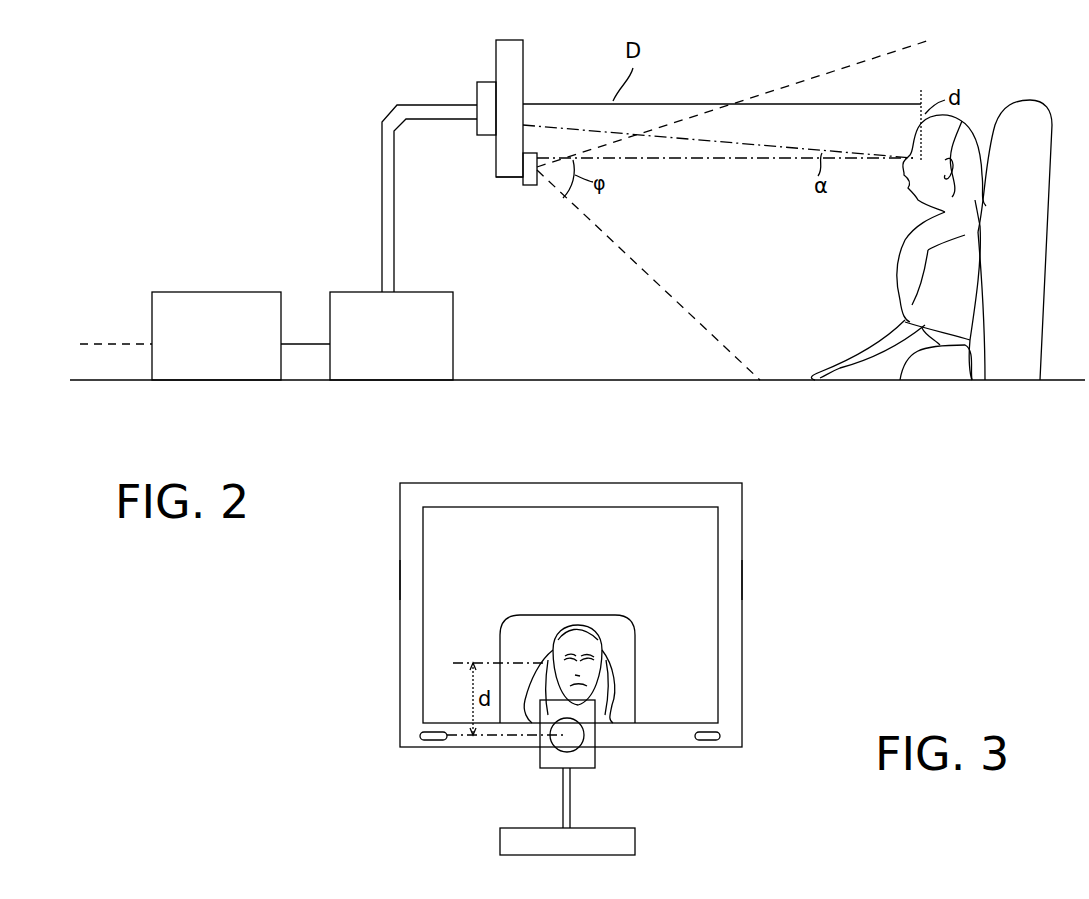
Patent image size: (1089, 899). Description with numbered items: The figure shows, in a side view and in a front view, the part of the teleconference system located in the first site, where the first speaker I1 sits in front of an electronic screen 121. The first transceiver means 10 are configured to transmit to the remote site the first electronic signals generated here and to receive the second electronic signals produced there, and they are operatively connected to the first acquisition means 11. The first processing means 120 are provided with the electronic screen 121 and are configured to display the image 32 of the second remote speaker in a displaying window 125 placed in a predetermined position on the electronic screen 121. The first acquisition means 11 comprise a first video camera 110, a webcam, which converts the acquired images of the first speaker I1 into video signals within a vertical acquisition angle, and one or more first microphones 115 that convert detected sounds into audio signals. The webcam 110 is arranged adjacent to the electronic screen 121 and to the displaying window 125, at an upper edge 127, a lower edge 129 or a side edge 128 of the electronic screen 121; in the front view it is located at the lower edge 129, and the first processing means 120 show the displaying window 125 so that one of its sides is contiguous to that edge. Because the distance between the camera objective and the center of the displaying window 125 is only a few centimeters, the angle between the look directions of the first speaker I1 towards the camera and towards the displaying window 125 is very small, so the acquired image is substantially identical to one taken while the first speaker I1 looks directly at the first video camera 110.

In FIG. 2, the first transceiver means 10 is at (205, 302).
In FIG. 2, the first processing means 120 is at (350, 302).
In FIG. 3, the first processing means 120 is at (640, 845).
In FIG. 2, the electronic screen 121 is at (518, 72).
In FIG. 3, the electronic screen 121 is at (695, 550).
In FIG. 2, the lower edge 129 is at (497, 178).
In FIG. 3, the lower edge 129 is at (672, 735).
In FIG. 2, the first acquisition means 11 is at (499, 197).
In FIG. 3, the first acquisition means 11 is at (511, 751).
In FIG. 2, the first video camera 110 is at (528, 188).
In FIG. 3, the first video camera 110 is at (548, 757).
In FIG. 2, the first speaker I1 is at (932, 332).
In FIG. 3, the upper edge 127 is at (470, 492).
In FIG. 3, the side edge 128 is at (408, 573).
In FIG. 3, the displaying window 125 is at (528, 622).
In FIG. 3, the image of the second remote speaker 32 is at (583, 622).
In FIG. 3, the first microphones 115 is at (435, 742).